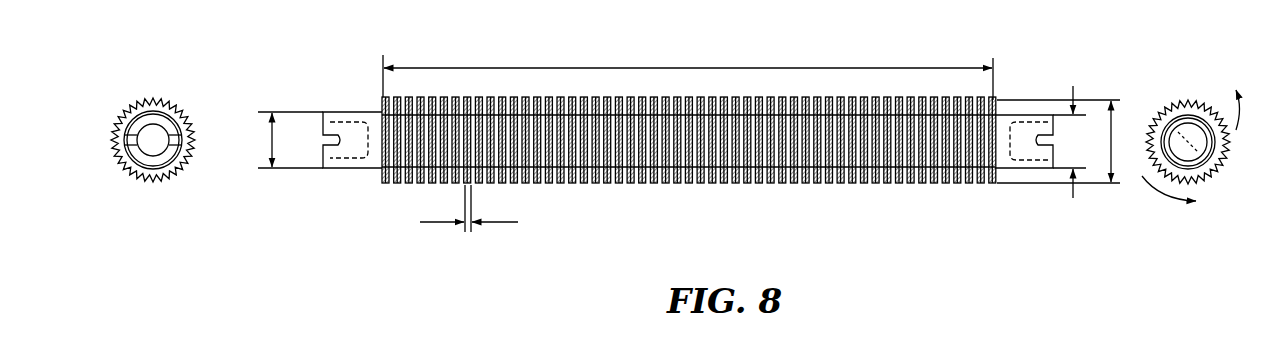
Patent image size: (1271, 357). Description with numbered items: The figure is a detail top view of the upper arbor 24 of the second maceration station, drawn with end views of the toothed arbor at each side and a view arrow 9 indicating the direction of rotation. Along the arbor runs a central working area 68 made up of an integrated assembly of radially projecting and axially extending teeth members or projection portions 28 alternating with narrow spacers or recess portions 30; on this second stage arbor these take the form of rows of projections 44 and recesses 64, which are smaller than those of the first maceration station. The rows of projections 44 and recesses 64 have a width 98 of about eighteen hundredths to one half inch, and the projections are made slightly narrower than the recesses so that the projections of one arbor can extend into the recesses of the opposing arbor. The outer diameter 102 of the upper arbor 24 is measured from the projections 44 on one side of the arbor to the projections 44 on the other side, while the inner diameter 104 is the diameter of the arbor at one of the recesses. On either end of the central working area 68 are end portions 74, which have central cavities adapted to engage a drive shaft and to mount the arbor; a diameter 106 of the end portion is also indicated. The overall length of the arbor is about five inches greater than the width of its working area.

The view 9 direction arrow 9 is at (1184, 97).
The upper arbor 24 is at (984, 34).
The projection portions 28 is at (865, 189).
The recess portions 30 is at (780, 189).
The projections 44 is at (666, 189).
The recesses 64 is at (568, 189).
The central working area 68 is at (686, 66).
The end portions 74 is at (356, 110).
The width 98 is at (467, 236).
The outer diameter 102 is at (1115, 140).
The inner diameter 104 is at (1092, 151).
The shaft end diameter 106 is at (267, 140).